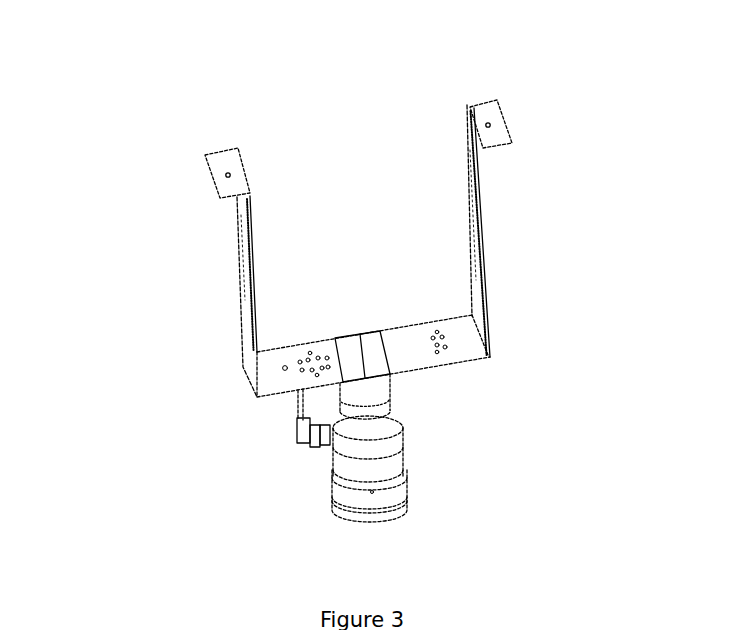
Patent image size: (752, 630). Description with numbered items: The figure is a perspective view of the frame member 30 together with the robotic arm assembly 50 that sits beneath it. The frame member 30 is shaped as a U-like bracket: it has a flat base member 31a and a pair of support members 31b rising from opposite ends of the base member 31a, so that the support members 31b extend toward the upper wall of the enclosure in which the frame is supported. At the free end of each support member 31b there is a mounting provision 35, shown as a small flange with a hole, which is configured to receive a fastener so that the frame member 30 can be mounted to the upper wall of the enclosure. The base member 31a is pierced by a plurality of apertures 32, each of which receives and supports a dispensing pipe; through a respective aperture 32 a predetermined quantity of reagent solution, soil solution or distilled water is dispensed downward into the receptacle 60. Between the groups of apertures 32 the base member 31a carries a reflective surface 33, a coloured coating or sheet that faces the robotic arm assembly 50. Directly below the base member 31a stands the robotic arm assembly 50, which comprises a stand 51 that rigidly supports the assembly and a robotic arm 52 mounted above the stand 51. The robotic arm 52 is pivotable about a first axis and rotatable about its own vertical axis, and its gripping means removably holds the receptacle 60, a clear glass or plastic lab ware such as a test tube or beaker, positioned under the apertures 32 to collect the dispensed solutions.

The frame member 30 is at (163, 92).
The base member 31a is at (278, 395).
The support member 31b is at (242, 292).
The apertures 32 is at (303, 342).
The reflective surface 33 is at (367, 333).
The mounting provision 35 is at (225, 150).
The robotic arm assembly 50 is at (527, 393).
The stand 51 is at (400, 493).
The robotic arm 52 is at (400, 447).
The receptacle 60 is at (388, 387).